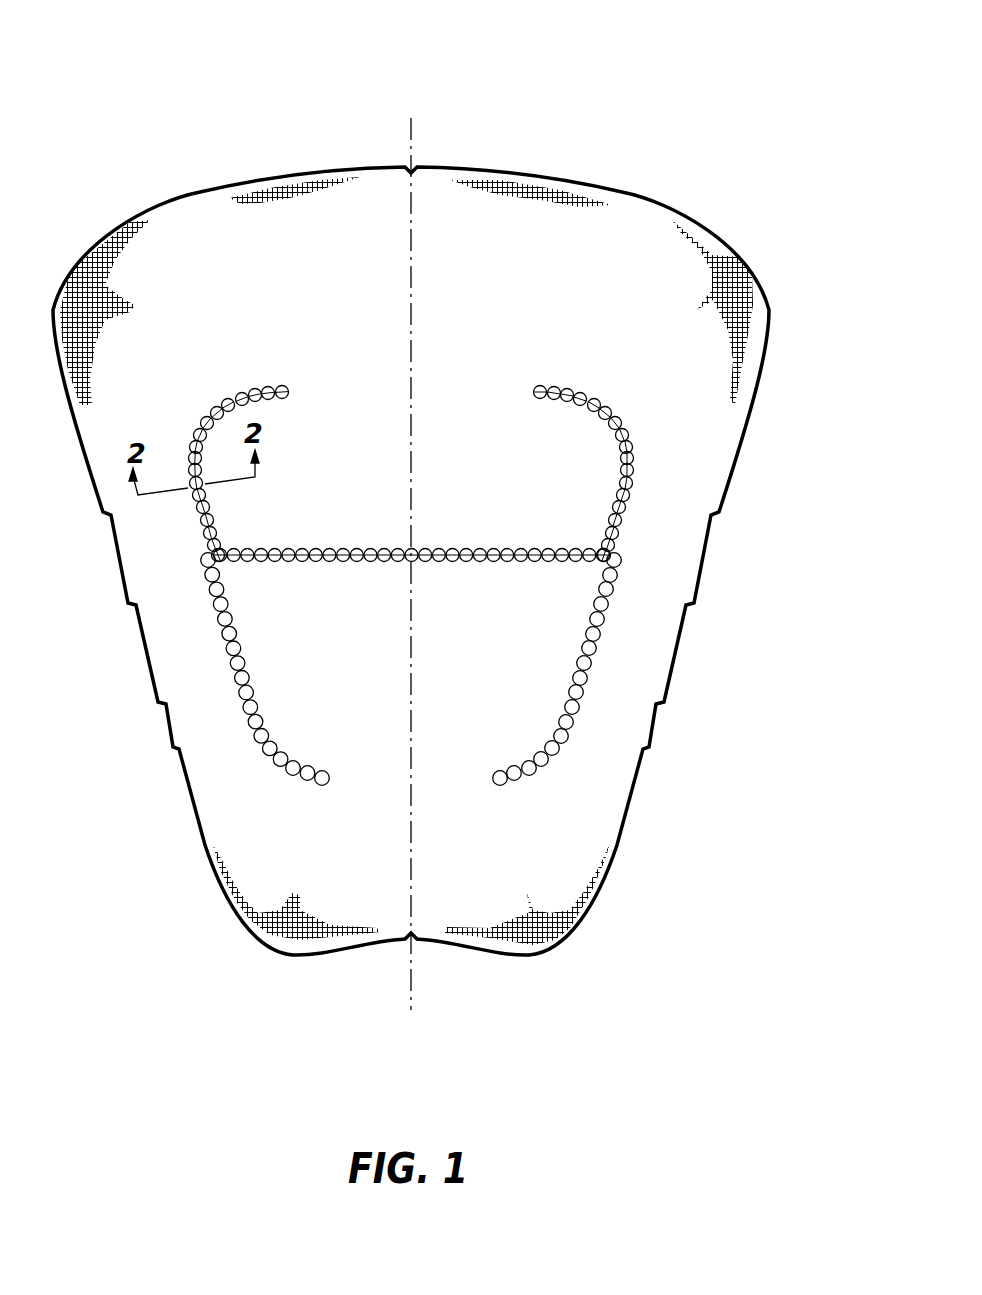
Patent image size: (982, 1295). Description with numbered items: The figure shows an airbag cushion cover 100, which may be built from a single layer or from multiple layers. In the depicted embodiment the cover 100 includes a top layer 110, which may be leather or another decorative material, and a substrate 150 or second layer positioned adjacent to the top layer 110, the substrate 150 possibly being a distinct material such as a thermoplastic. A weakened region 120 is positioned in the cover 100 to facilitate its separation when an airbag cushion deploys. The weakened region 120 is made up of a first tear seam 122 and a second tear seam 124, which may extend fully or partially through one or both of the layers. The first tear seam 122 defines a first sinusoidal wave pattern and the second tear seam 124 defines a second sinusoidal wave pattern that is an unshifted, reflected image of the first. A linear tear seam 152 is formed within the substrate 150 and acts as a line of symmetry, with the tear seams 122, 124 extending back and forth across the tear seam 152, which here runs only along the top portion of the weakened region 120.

The airbag cushion cover 100 is at (638, 103).
The top layer 110 is at (695, 283).
The weakened region 120 is at (201, 631).
The first tear seam 122 is at (321, 786).
The second tear seam 124 is at (304, 781).
The substrate 150 is at (640, 238).
The linear tear seam 152 is at (541, 386).